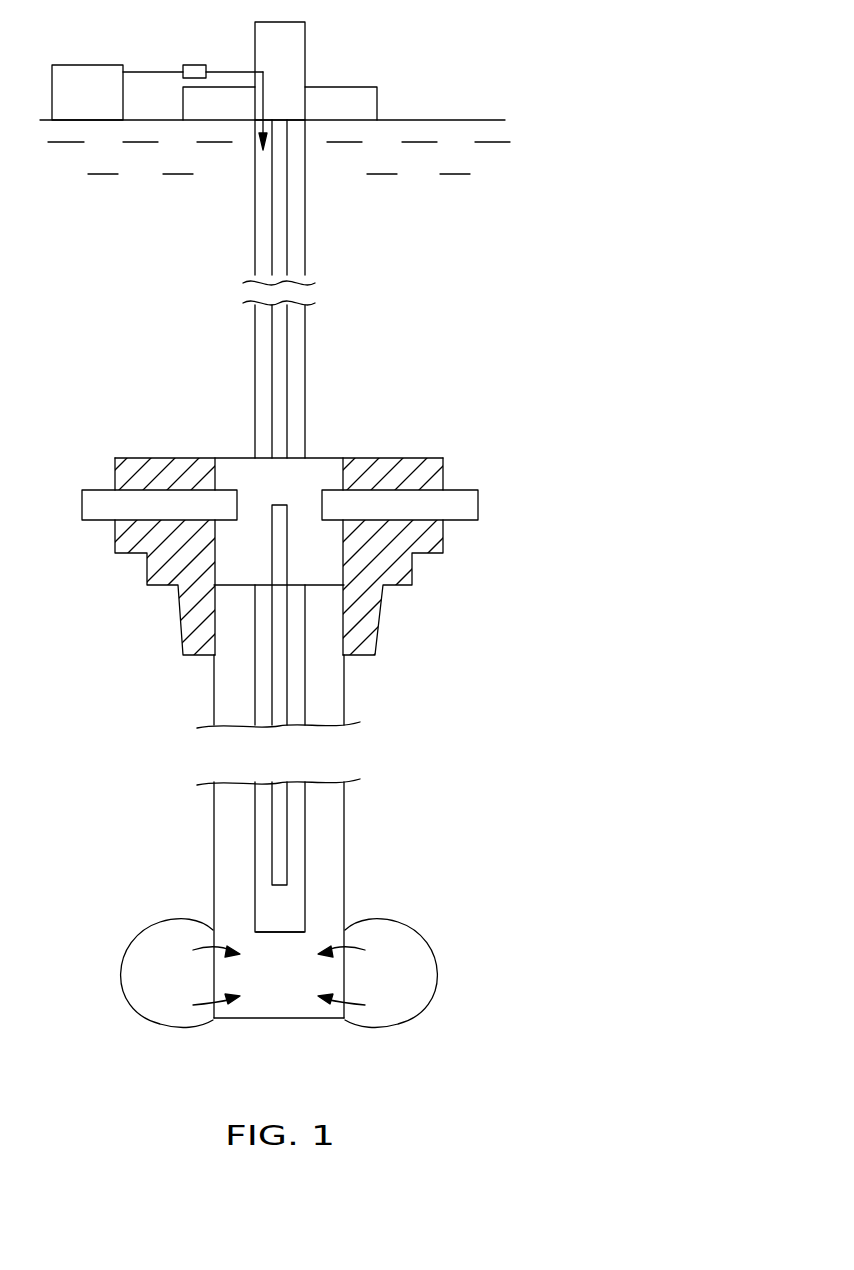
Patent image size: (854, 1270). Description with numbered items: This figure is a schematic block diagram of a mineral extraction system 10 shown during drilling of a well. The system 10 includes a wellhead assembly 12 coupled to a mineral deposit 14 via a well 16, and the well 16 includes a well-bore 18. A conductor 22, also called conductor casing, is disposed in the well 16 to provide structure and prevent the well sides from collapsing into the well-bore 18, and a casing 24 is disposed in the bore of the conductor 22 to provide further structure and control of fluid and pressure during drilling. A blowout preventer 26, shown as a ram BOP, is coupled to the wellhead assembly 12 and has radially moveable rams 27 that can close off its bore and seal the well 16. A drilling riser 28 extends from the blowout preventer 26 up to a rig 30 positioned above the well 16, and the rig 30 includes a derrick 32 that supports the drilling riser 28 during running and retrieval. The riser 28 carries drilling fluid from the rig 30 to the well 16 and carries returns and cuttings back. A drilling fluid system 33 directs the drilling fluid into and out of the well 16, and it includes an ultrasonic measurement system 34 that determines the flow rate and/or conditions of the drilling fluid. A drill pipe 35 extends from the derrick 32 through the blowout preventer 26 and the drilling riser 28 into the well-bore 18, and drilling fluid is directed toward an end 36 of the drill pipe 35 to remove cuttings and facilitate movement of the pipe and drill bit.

The mineral extraction system 10 is at (490, 223).
The wellhead assembly 12 is at (377, 630).
The mineral deposit 14 is at (420, 963).
The well 16 is at (482, 690).
The well-bore 18 is at (290, 908).
The conductor 22 is at (345, 705).
The casing 24 is at (305, 857).
The blowout preventer 26 is at (428, 458).
The rams 27 is at (92, 521).
The drilling riser 28 is at (305, 198).
The rig 30 is at (377, 103).
The derrick 32 is at (305, 53).
The drilling fluid system 33 is at (86, 65).
The ultrasonic measurement system 34 is at (194, 65).
The drill pipe 35 is at (287, 180).
The end of drill pipe 36 is at (276, 892).